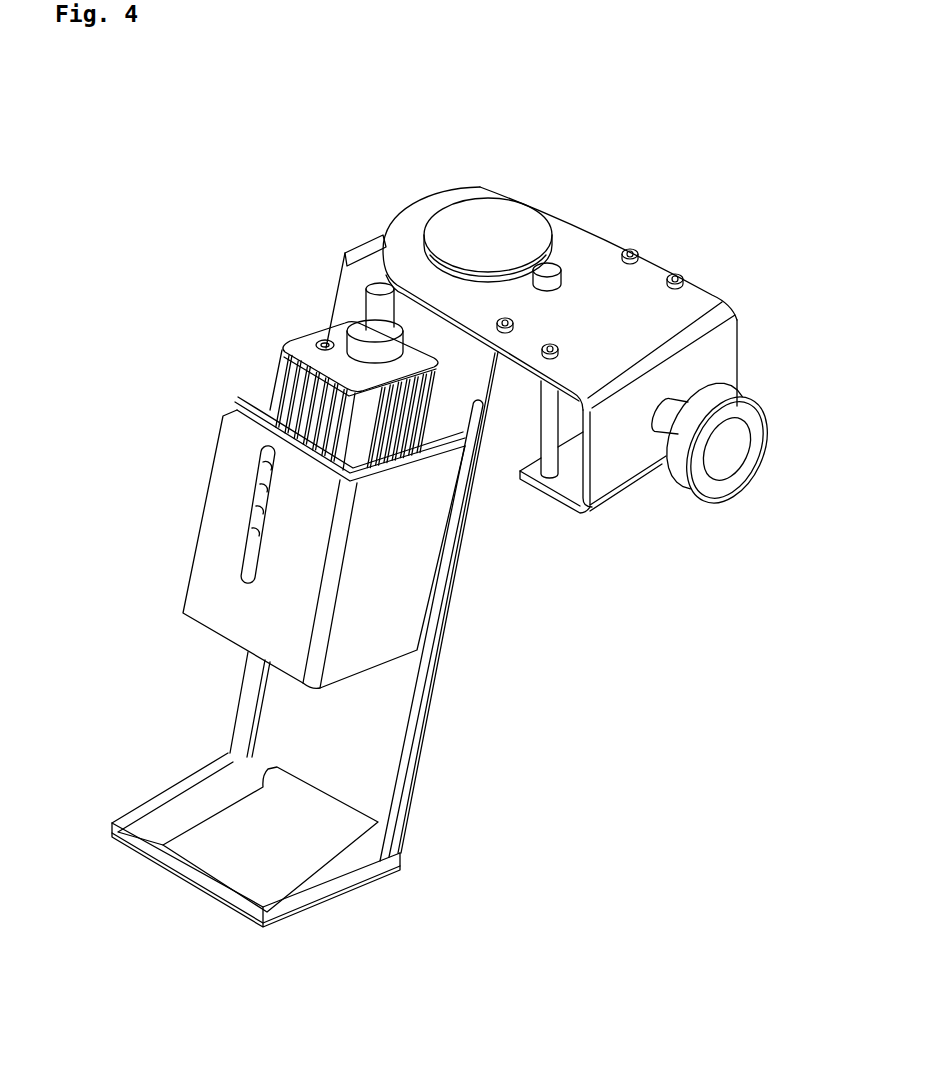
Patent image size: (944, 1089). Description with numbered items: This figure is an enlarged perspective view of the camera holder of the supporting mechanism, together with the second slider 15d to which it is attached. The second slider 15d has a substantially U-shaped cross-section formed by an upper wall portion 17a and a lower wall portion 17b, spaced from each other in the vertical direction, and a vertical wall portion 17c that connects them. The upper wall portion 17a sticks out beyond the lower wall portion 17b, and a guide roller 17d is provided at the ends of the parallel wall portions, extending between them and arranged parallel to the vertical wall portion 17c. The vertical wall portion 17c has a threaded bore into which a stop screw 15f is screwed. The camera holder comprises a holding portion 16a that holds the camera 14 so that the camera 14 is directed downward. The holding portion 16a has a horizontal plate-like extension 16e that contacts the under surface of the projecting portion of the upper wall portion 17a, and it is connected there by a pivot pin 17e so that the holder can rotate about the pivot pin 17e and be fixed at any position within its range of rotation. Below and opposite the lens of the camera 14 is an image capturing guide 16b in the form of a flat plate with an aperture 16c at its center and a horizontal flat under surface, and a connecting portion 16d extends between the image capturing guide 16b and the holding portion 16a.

The camera 14 is at (298, 341).
The second slider 15d is at (627, 292).
The stop screw 15f is at (727, 457).
The holding portion 16a is at (417, 560).
The image capturing guide 16b is at (187, 817).
The aperture 16c is at (342, 845).
The connecting portion 16d is at (393, 727).
The horizontal plate-like extension 16e is at (380, 248).
The upper wall portion 17a is at (680, 310).
The lower wall portion 17b is at (570, 482).
The vertical wall portion 17c is at (724, 359).
The guide roller 17d is at (553, 427).
The pivot pin 17e is at (484, 228).